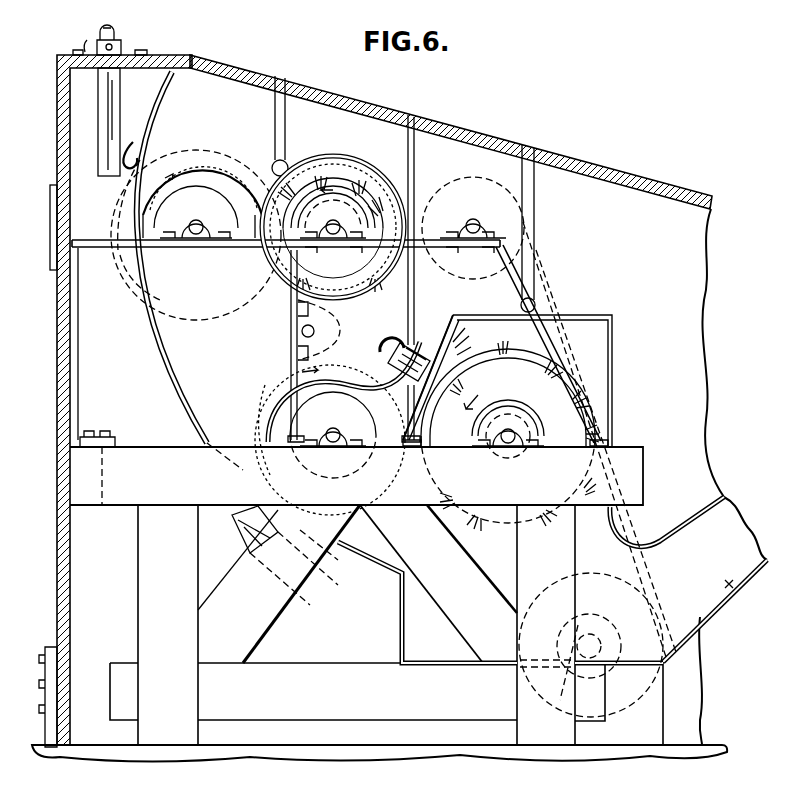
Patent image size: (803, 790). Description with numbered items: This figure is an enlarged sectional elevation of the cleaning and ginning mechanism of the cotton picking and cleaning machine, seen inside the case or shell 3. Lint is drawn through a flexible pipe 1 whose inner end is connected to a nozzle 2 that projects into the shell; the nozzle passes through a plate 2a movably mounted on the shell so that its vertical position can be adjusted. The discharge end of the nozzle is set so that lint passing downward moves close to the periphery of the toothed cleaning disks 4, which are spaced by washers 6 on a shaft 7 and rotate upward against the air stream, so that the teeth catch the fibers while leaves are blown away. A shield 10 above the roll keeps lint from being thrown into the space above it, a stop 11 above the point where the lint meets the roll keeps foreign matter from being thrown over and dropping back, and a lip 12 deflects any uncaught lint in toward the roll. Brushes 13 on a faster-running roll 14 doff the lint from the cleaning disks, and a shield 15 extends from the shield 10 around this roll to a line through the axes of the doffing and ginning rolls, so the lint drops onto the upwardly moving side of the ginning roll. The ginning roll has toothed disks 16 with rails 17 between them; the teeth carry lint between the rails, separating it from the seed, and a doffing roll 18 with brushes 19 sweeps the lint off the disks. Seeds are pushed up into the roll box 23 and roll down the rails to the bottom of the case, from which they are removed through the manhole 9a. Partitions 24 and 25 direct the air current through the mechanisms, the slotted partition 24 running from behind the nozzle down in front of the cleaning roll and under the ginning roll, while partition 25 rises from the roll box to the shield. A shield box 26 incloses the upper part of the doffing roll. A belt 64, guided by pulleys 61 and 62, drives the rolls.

The flexible pipe 1 is at (118, 42).
The plate 2a is at (68, 34).
The nozzle 2 is at (98, 125).
The case or shell 3 is at (457, 130).
The cleaning disk 4 is at (130, 210).
The spacing washer 6 is at (205, 262).
The shaft 7 is at (725, 578).
The manhole 9a is at (57, 681).
The shield 10 is at (217, 145).
The stop 11 is at (138, 138).
The lip 12 is at (127, 282).
The brush 13 is at (303, 174).
The roll 14 is at (375, 204).
The shield 15 is at (370, 188).
The toothed disk 16 is at (317, 440).
The rail 17 is at (346, 380).
The doffing roll 18 is at (550, 360).
The brush 19 is at (472, 345).
The roll box 23 is at (392, 336).
The partition 24 is at (162, 372).
The partition 25 is at (414, 288).
The shield box 26 is at (612, 368).
The guide pulley 61 is at (296, 332).
The guide pulley 62 is at (479, 185).
The belt 64 is at (538, 270).